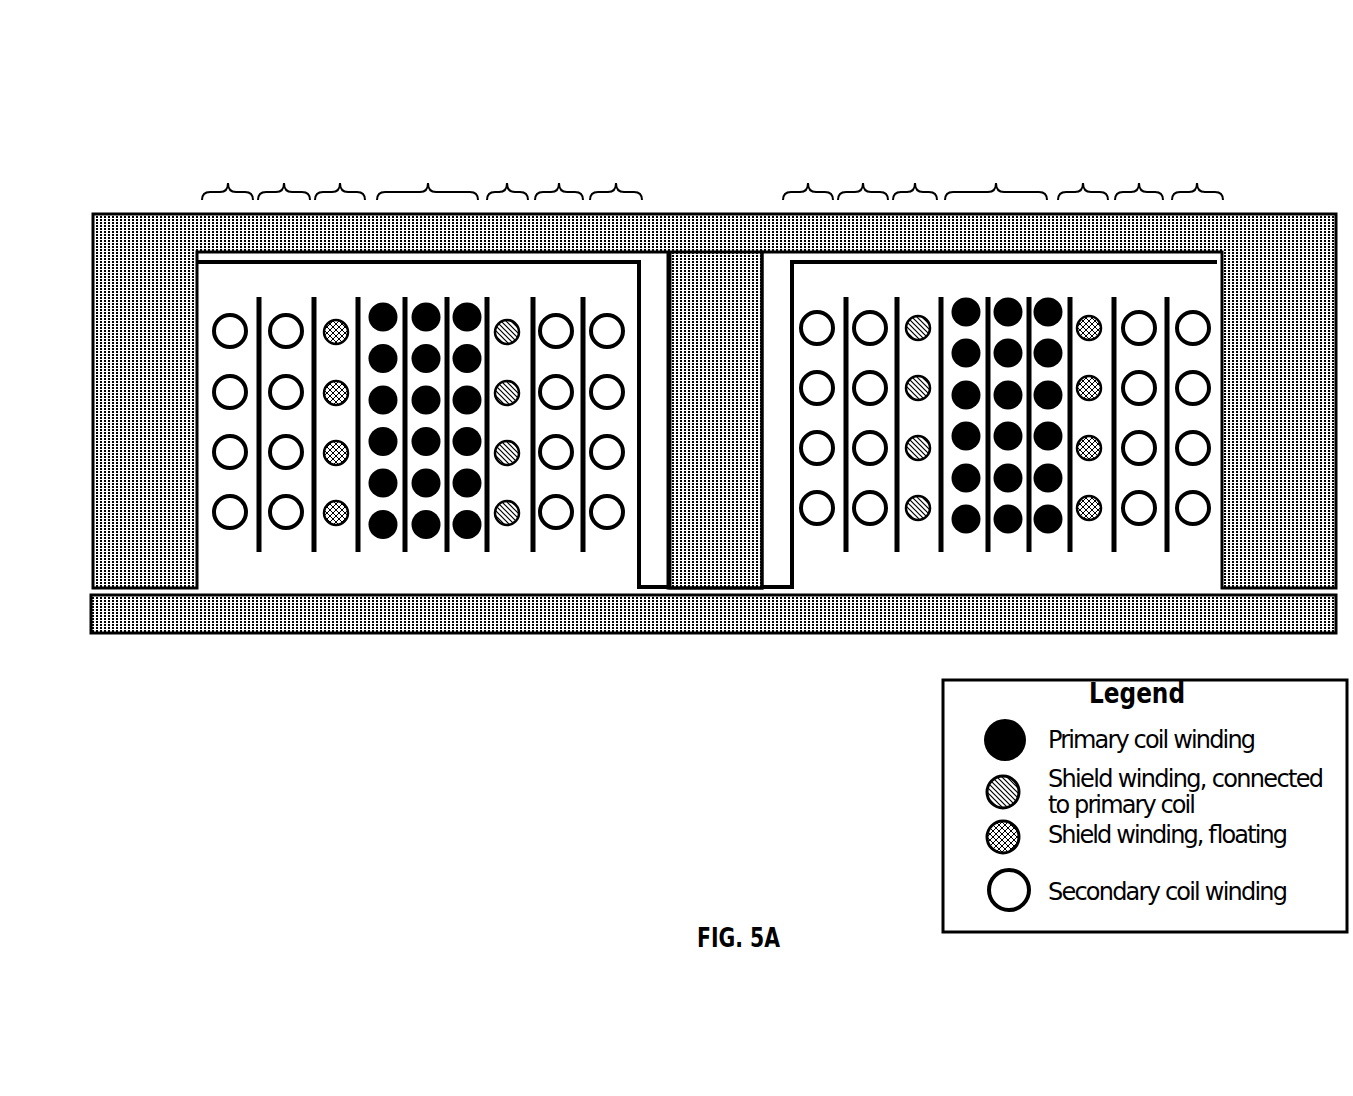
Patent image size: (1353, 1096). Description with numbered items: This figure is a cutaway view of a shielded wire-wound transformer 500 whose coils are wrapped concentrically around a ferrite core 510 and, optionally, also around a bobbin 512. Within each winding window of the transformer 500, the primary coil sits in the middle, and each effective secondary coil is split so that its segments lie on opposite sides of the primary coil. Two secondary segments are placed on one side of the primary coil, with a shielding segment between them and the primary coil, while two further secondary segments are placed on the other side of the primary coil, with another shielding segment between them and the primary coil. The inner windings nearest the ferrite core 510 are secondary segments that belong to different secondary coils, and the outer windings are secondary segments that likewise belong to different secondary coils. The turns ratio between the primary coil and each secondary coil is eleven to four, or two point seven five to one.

The wire-wound transformer 500 is at (241, 77).
The ferrite core 510 is at (685, 572).
The bobbin 512 is at (655, 532).